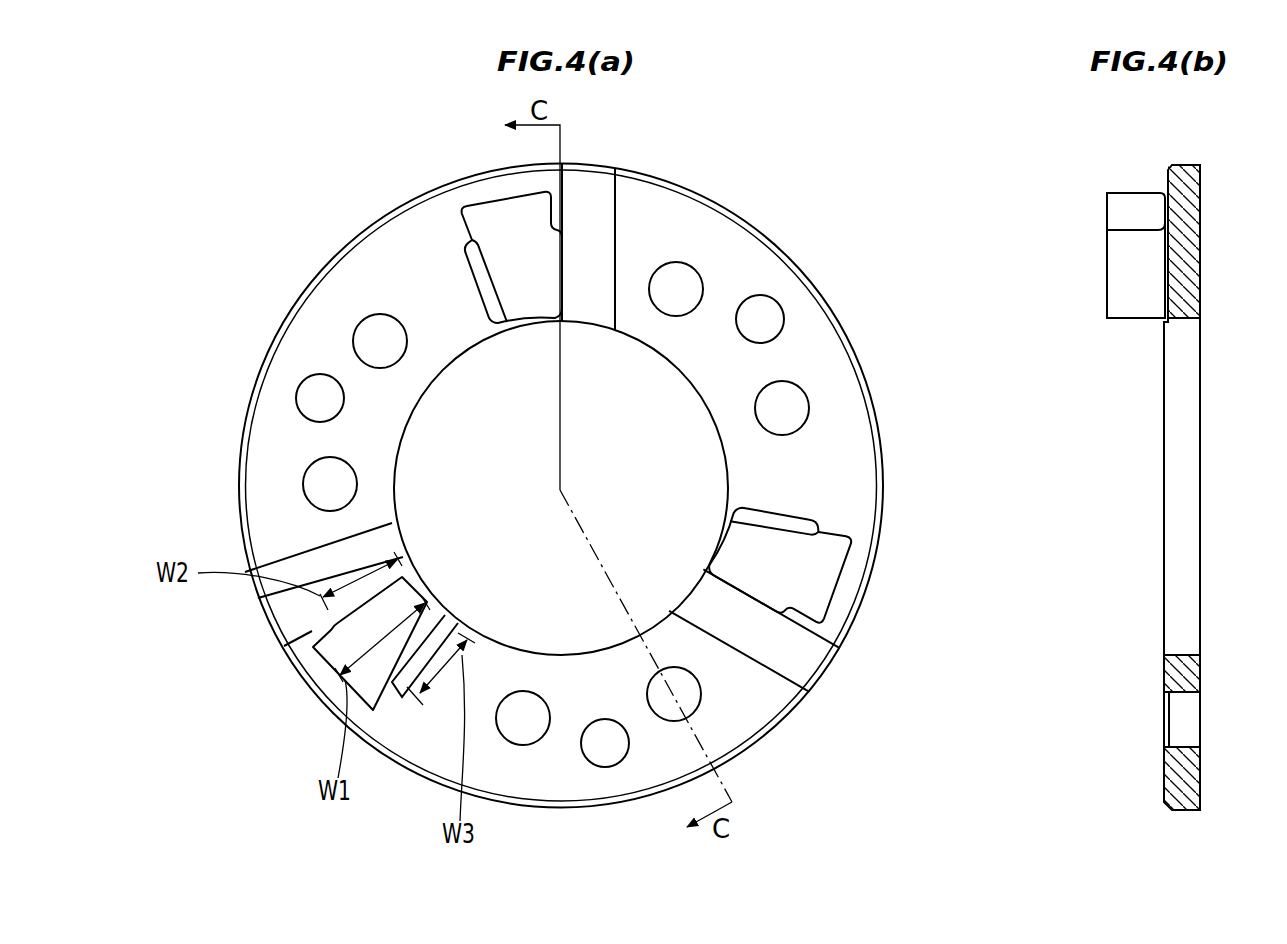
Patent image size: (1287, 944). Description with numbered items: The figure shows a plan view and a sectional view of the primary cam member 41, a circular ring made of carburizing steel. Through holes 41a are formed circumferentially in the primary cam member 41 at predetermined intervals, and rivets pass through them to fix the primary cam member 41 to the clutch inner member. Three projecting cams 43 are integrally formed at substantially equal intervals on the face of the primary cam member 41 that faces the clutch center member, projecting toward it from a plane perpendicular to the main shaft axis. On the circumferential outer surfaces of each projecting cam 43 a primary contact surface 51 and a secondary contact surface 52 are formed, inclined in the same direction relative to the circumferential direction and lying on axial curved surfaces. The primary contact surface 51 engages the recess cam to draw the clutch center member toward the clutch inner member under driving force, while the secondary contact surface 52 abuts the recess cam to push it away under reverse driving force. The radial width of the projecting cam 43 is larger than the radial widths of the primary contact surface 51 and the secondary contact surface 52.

In FIG. 4A, the primary cam member 41 is at (773, 285).
In FIG. 4B, the primary cam member 41 is at (1185, 253).
In FIG. 4A, the through holes 41a is at (690, 302).
In FIG. 4B, the through holes 41a is at (1185, 745).
In FIG. 4A, the projecting cam 43 is at (510, 224).
In FIG. 4B, the projecting cam 43 is at (1107, 270).
In FIG. 4A, the primary contact surface 51 is at (568, 262).
In FIG. 4B, the primary contact surface 51 is at (1140, 258).
In FIG. 4A, the secondary contact surface 52 is at (485, 292).